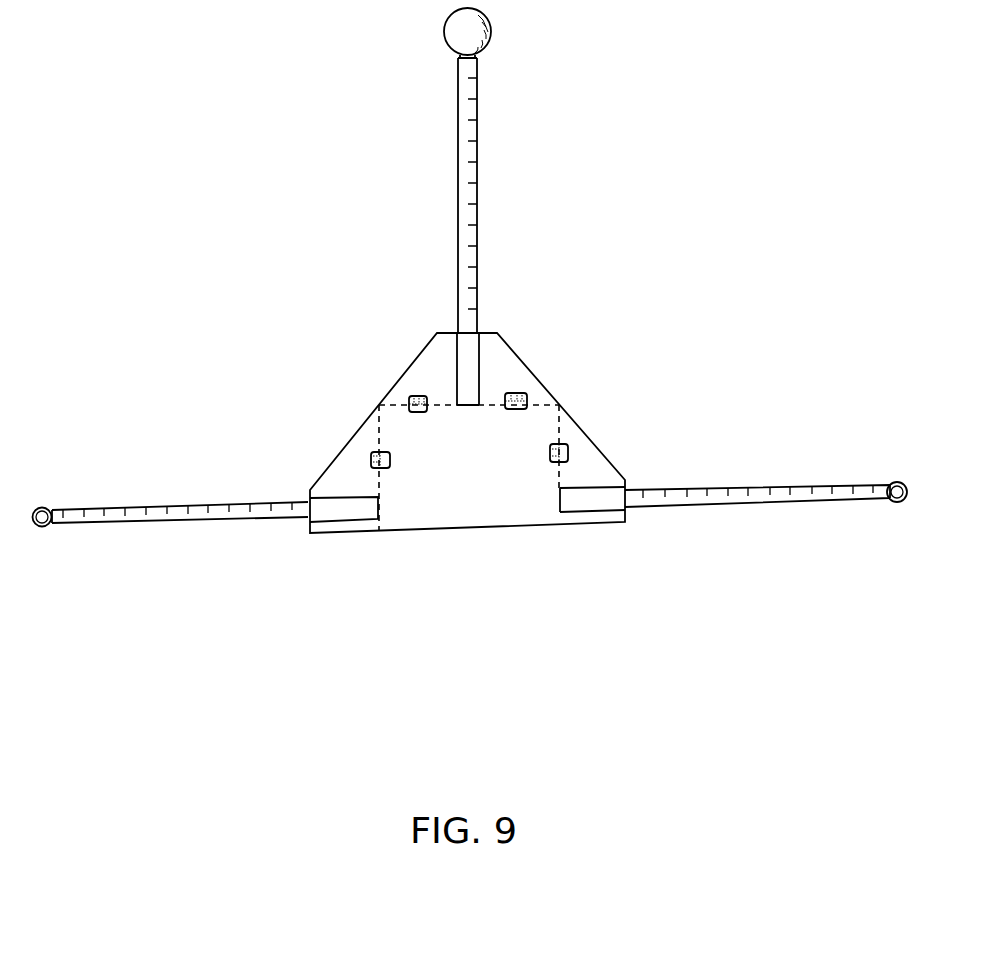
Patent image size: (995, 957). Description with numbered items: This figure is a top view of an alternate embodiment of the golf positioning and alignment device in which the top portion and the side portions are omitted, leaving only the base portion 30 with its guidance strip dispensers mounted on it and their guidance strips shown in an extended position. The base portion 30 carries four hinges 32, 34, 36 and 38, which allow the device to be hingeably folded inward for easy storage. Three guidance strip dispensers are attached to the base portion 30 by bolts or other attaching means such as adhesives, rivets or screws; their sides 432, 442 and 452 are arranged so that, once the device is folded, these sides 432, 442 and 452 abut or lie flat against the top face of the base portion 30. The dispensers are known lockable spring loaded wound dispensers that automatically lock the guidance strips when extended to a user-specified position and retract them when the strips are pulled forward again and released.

The base portion 30 is at (477, 512).
The hinge 32 is at (563, 446).
The hinge 34 is at (518, 393).
The hinge 36 is at (413, 400).
The hinge 38 is at (376, 456).
The side of guidance strip dispenser 432 is at (384, 511).
The side of guidance strip dispenser 442 is at (557, 505).
The side of guidance strip dispenser 452 is at (463, 399).